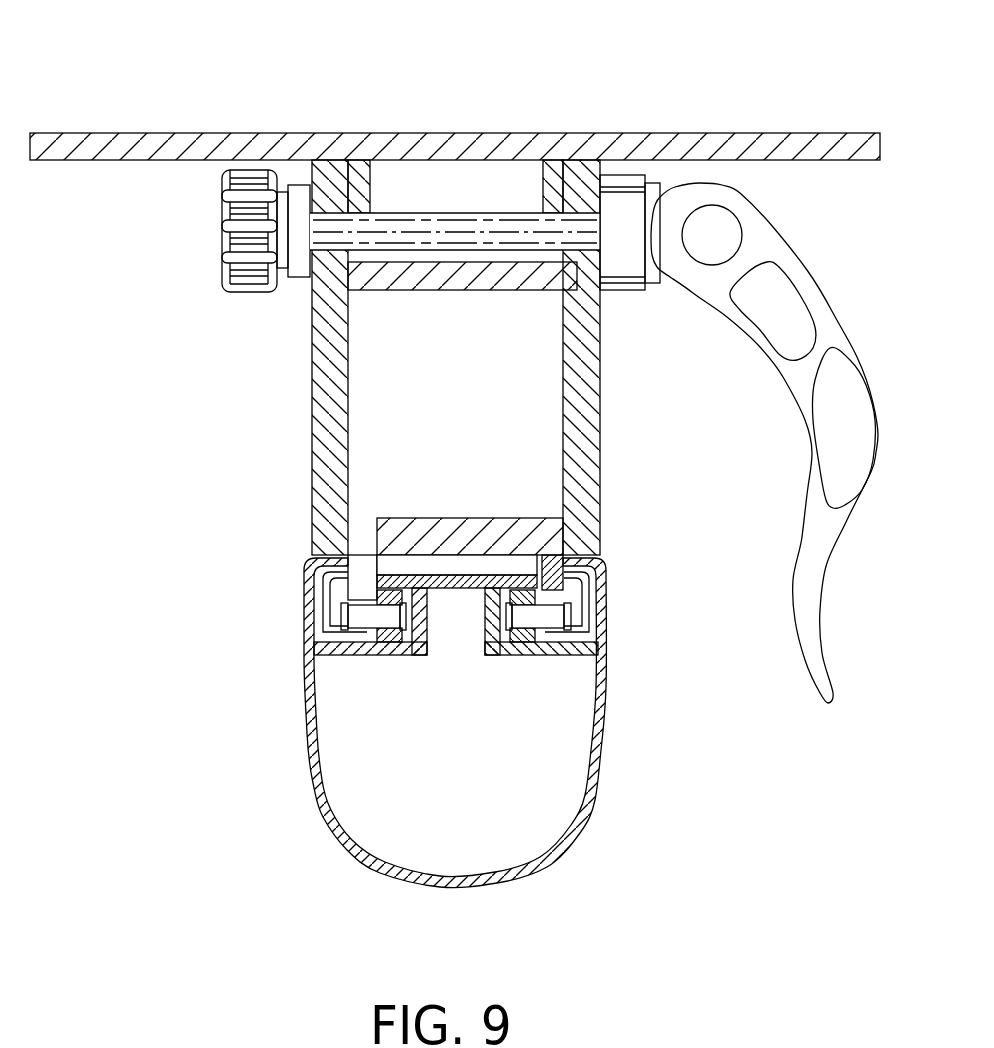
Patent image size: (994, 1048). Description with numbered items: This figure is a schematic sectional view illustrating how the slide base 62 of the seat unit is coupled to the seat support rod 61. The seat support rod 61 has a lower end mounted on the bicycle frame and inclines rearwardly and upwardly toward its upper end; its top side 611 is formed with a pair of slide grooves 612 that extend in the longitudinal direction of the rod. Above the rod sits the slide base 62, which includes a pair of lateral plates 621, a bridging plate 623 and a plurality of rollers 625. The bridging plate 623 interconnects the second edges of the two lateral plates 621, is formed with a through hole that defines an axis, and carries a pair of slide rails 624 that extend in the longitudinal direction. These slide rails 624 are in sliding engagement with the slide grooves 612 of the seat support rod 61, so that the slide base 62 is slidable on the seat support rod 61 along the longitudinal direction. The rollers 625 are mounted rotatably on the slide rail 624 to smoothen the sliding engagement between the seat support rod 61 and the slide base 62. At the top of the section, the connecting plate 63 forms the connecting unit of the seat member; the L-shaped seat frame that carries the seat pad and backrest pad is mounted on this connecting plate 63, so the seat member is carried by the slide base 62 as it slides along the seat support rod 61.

The seat support rod 61 is at (453, 692).
The top side 611 is at (370, 592).
The slide grooves 612 is at (317, 619).
The slide base 62 is at (440, 357).
The lateral plates 621 is at (313, 330).
The bridging plate 623 is at (490, 530).
The slide rails 624 is at (325, 578).
The rollers 625 is at (380, 657).
The connecting plate 63 is at (170, 133).